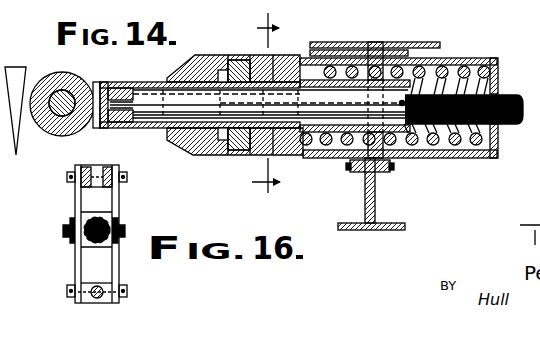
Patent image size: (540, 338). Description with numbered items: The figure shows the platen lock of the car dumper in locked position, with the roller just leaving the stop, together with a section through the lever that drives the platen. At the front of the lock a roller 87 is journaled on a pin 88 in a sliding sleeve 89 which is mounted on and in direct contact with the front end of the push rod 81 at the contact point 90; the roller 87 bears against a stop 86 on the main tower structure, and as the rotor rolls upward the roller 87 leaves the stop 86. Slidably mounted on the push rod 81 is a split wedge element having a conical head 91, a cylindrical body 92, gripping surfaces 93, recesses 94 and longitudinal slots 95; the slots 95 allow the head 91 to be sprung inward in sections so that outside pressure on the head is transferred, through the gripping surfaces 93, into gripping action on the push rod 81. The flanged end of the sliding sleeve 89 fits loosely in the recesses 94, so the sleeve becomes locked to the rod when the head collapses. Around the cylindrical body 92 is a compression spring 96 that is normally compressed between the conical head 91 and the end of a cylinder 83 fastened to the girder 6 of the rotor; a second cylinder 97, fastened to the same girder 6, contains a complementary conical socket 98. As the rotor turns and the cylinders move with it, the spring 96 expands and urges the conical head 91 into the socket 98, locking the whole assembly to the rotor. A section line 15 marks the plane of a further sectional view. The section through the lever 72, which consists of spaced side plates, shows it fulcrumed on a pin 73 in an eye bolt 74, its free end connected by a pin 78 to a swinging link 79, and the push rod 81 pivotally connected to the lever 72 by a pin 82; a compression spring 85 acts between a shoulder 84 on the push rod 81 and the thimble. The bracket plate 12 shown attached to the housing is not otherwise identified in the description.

In FIG. 14, the stop 86 is at (19, 70).
In FIG. 14, the roller 87 is at (45, 77).
In FIG. 14, the pin 88 is at (61, 98).
In FIG. 14, the sliding sleeve 89 is at (136, 82).
In FIG. 14, the contact point 90 is at (129, 88).
In FIG. 14, the push rod 81 is at (131, 100).
In FIG. 16, the push rod 81 is at (91, 242).
In FIG. 14, the cylinder 97 is at (193, 154).
In FIG. 14, the conical socket 98 is at (212, 156).
In FIG. 14, the recesses 94 is at (243, 156).
In FIG. 14, the longitudinal slots 95 is at (275, 66).
In FIG. 14, the gripping surfaces 93 is at (278, 157).
In FIG. 14, the conical head 91 is at (260, 68).
In FIG. 14, the cylinder 83 is at (496, 60).
In FIG. 14, the compression spring 96 is at (441, 142).
In FIG. 14, the bracket plate 12 is at (412, 42).
In FIG. 14, the cylindrical body 92 is at (398, 158).
In FIG. 14, the girder 6 is at (381, 230).
In FIG. 14, the section line 15 is at (274, 107).
In FIG. 16, the lever 72 is at (75, 202).
In FIG. 16, the swinging link 79 is at (97, 170).
In FIG. 16, the pin 78 is at (67, 176).
In FIG. 16, the shoulder 84 is at (103, 247).
In FIG. 16, the compression spring 85 is at (110, 213).
In FIG. 16, the pin 82 is at (63, 232).
In FIG. 16, the eye bolt 74 is at (95, 300).
In FIG. 16, the pin 73 is at (68, 292).